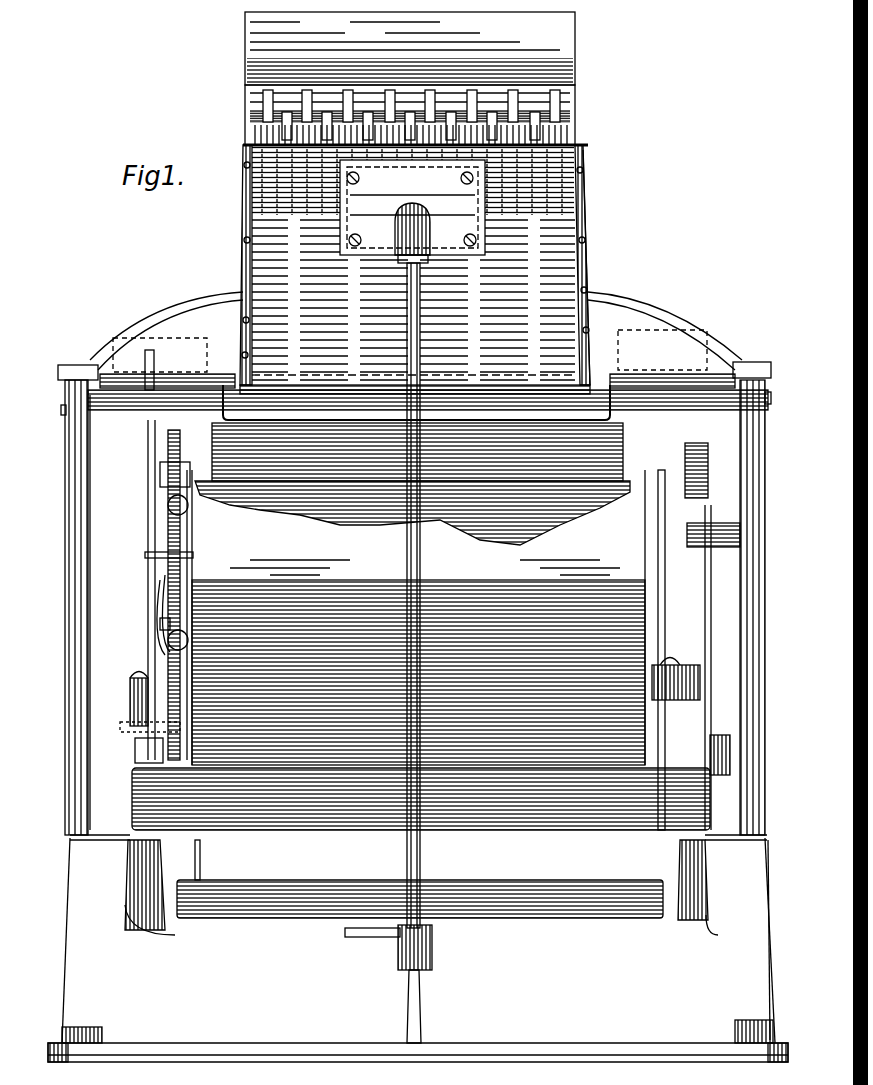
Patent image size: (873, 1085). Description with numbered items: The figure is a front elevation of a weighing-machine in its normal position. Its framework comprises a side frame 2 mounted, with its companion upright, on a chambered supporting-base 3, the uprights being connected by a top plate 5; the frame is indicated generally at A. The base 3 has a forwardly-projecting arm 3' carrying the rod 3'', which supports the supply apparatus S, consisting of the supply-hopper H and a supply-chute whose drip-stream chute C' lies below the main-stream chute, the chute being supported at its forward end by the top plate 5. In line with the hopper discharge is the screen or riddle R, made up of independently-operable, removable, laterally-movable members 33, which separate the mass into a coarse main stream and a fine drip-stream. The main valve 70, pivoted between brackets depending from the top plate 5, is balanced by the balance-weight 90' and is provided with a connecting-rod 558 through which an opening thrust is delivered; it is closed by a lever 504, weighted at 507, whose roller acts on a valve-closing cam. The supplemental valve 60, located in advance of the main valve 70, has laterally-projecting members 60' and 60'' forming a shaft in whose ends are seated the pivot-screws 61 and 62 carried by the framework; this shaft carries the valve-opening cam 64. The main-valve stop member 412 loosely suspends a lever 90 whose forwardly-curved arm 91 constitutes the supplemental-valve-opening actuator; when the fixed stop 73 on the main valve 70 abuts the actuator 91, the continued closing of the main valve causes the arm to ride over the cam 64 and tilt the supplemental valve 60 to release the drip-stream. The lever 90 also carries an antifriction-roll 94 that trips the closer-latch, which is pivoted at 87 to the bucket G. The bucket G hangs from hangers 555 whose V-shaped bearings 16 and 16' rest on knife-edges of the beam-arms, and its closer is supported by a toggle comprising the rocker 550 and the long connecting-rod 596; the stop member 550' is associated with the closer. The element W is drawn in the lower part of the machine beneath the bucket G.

The supply-hopper H is at (560, 50).
The screen members 33 is at (560, 95).
The screen or riddle R is at (576, 130).
The supply apparatus S is at (415, 269).
The drip-stream chute C' is at (593, 267).
The rod 3'' is at (424, 565).
The top plate 5 is at (195, 308).
The balance-weight 90' is at (411, 335).
The pivot-screw 61 is at (62, 412).
The pivot-screw 62 is at (771, 398).
The side frame 2 is at (68, 712).
The frame A is at (768, 700).
The supplemental valve 60 is at (428, 402).
The laterally-projecting member 60' is at (167, 407).
The laterally-projecting member 60'' is at (672, 401).
The valve-opening cam 64 is at (155, 362).
The main valve 70 is at (412, 499).
The bucket G is at (418, 617).
The cylinder W is at (421, 799).
The supporting-base 3 is at (418, 948).
The forwardly-projecting arm 3' is at (405, 984).
The main-valve stop member 412 is at (155, 435).
The forwardly-curved arm 91 is at (158, 452).
The lever 90 is at (152, 595).
The rocker 550 is at (151, 511).
The fixed stop 73 is at (140, 555).
The lever 550' is at (141, 615).
The antifriction-roll 94 is at (160, 626).
The latch pivot 87 is at (170, 640).
The hangers 555 is at (130, 690).
The V-shaped bearing 16 is at (138, 742).
The connecting-rod 596 is at (665, 585).
The connecting-rod 558 is at (711, 628).
The weight 507 is at (715, 484).
The lever 504 is at (698, 520).
The V-shaped bearing 16' is at (727, 747).